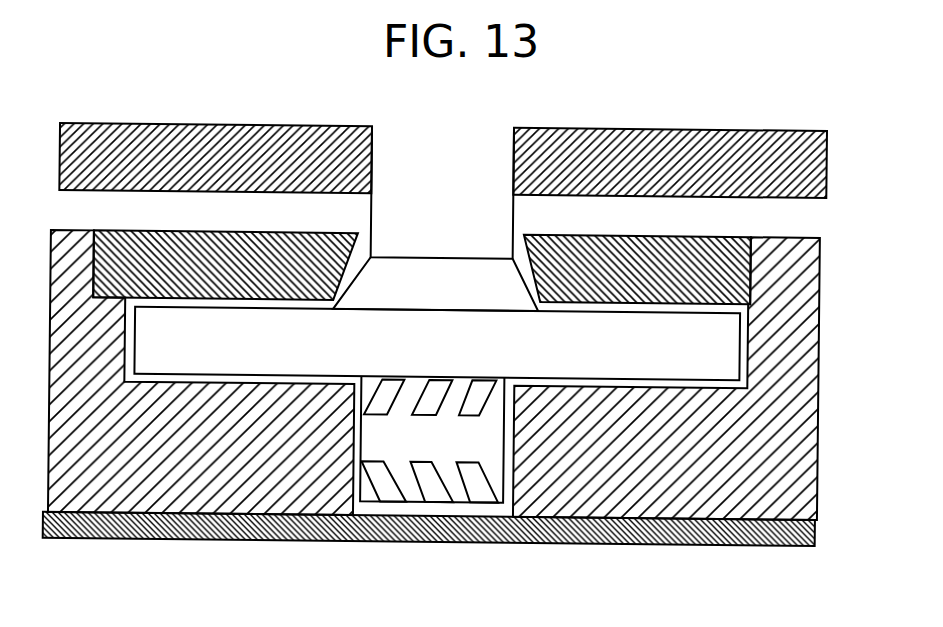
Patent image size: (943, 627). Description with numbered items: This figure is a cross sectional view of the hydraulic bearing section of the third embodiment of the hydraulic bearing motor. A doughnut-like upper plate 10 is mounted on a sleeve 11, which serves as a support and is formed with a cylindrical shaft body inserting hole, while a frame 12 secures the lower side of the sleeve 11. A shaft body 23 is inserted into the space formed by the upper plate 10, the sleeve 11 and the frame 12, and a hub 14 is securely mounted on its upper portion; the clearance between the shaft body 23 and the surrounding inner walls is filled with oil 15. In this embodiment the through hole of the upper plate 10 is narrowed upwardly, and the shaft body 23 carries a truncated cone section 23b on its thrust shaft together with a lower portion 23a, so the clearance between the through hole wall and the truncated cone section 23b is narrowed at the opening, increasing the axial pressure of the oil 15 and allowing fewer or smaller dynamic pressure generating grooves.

The upper plate 10 is at (588, 240).
The sleeve 11 is at (820, 348).
The frame 12 is at (598, 545).
The hub 14 is at (200, 133).
The oil 15 is at (282, 306).
The shaft body 23 is at (477, 141).
The lower member with slanted bars 23a is at (389, 498).
The truncated cone section 23b is at (385, 272).